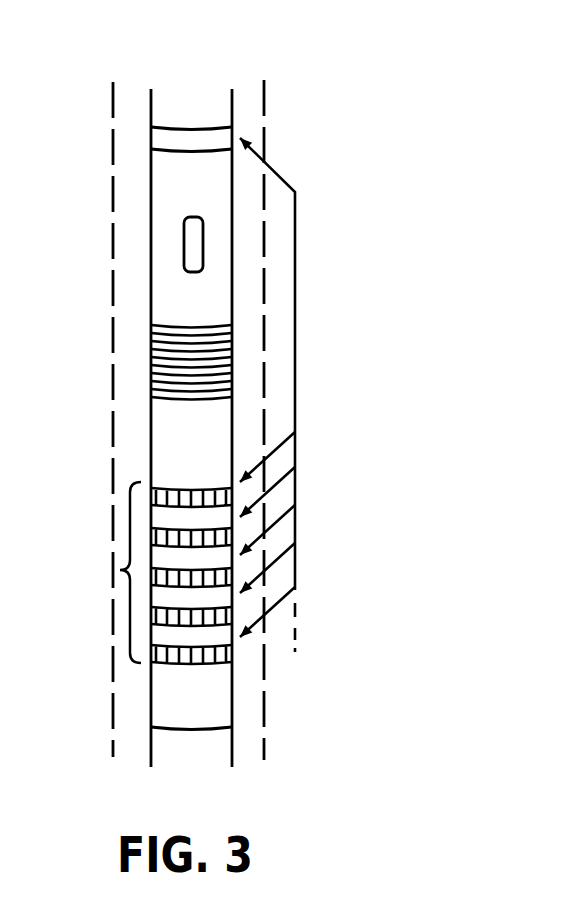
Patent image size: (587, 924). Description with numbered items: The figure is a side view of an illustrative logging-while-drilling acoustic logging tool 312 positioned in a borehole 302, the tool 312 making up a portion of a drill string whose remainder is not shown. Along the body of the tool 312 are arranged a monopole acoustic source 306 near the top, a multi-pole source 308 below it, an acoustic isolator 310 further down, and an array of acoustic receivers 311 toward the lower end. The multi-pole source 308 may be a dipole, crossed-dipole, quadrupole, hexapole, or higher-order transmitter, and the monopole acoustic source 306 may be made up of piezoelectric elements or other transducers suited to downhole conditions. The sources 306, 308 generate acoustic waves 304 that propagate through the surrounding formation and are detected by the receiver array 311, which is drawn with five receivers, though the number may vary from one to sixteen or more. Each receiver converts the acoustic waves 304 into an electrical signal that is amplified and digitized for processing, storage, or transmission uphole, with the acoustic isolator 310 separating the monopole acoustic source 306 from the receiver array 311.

The borehole 302 is at (265, 120).
The acoustic waves 304 is at (283, 175).
The monopole acoustic source 306 is at (155, 150).
The multi-pole source 308 is at (182, 240).
The acoustic isolator 310 is at (152, 352).
The array of acoustic receivers 311 is at (119, 570).
The acoustic logging tool 312 is at (158, 702).